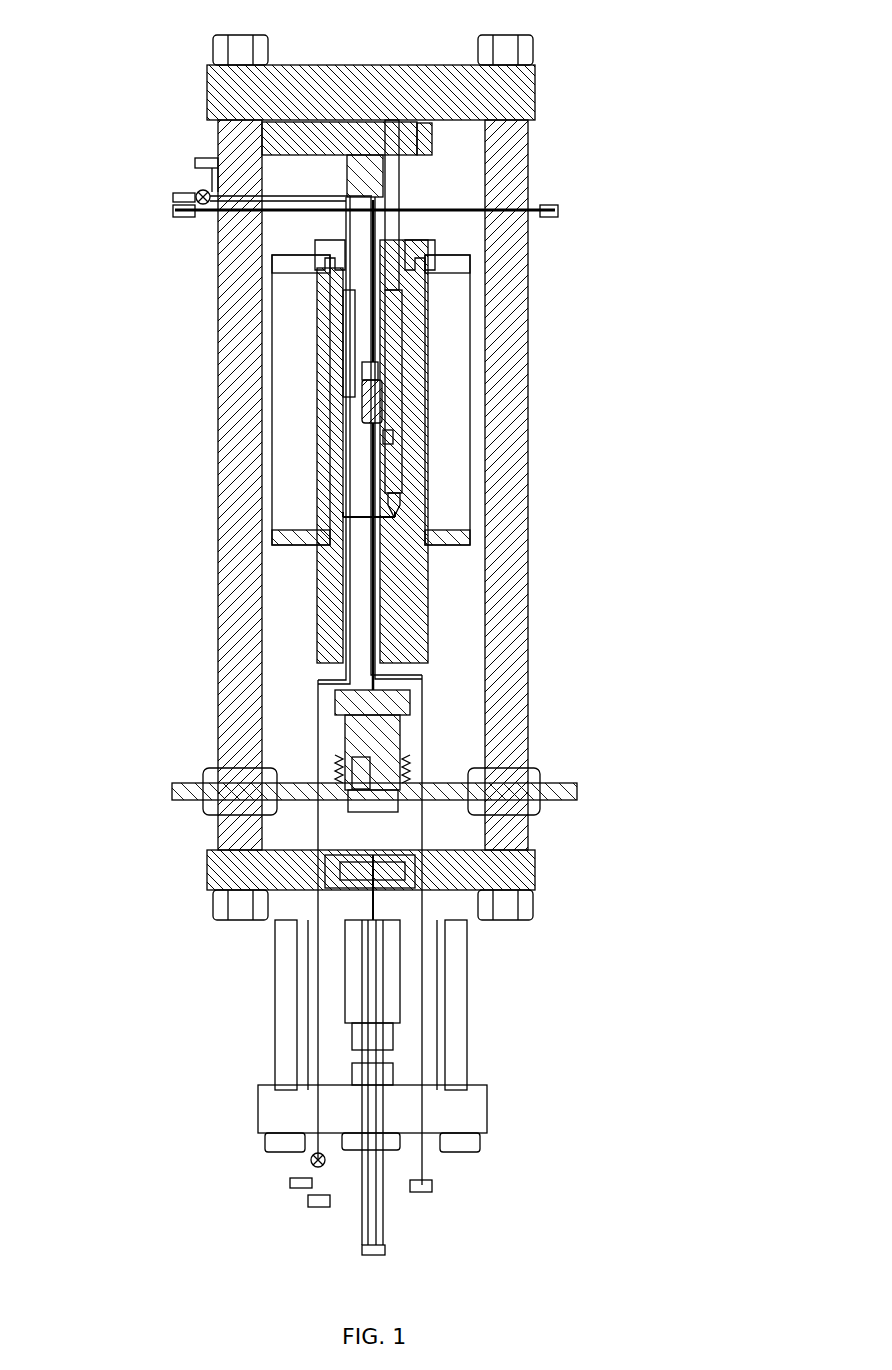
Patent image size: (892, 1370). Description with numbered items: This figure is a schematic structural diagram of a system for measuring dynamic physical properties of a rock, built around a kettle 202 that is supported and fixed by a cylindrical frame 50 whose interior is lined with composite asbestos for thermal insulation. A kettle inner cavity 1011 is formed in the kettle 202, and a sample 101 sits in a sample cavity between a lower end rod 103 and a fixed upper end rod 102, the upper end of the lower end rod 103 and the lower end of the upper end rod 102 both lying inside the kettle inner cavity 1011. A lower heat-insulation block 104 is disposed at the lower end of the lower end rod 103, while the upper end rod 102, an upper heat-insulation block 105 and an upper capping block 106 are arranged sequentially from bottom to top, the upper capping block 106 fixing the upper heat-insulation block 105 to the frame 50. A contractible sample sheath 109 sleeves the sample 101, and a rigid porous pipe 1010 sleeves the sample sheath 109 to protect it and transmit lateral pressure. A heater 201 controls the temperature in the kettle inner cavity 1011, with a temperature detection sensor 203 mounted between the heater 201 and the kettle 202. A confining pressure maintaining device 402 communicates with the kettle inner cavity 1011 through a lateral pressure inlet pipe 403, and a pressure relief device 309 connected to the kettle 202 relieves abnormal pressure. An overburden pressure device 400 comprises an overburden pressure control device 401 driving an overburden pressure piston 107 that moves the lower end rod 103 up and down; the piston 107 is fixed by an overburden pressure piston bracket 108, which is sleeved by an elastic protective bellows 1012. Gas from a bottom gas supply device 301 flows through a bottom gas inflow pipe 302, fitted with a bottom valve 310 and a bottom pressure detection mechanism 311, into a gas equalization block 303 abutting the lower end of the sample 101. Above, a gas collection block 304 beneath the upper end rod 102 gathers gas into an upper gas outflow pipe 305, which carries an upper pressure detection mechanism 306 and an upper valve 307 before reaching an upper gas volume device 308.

The frame 50 is at (232, 617).
The sample 101 is at (382, 405).
The upper end rod 102 is at (385, 332).
The lower end rod 103 is at (396, 475).
The lower heat-insulation block 104 is at (390, 745).
The upper heat-insulation block 105 is at (380, 173).
The upper capping block 106 is at (432, 138).
The overburden pressure piston 107 is at (430, 562).
The overburden pressure piston bracket 108 is at (385, 805).
The sample sheath 109 is at (362, 372).
The porous pipe 1010 is at (362, 398).
The kettle inner cavity 1011 is at (352, 332).
The protective bellows 1012 is at (352, 765).
The heater 201 is at (296, 445).
The kettle 202 is at (330, 490).
The temperature detection sensor 203 is at (343, 518).
The bottom gas supply device 301 is at (432, 1188).
The bottom gas inflow pipe 302 is at (422, 985).
The gas equalization block 303 is at (378, 437).
The gas collection block 304 is at (373, 372).
The upper gas outflow pipe 305 is at (327, 195).
The upper pressure detection mechanism 306 is at (206, 158).
The upper valve 307 is at (197, 192).
The upper gas volume device 308 is at (178, 195).
The pressure relief device 309 is at (175, 208).
The bottom valve 310 is at (311, 1163).
The bottom pressure detection mechanism 311 is at (290, 1183).
The overburden pressure device 400 is at (430, 620).
The overburden pressure control device 401 is at (385, 1252).
The confining pressure maintaining device 402 is at (308, 1202).
The lateral pressure inlet pipe 403 is at (318, 732).